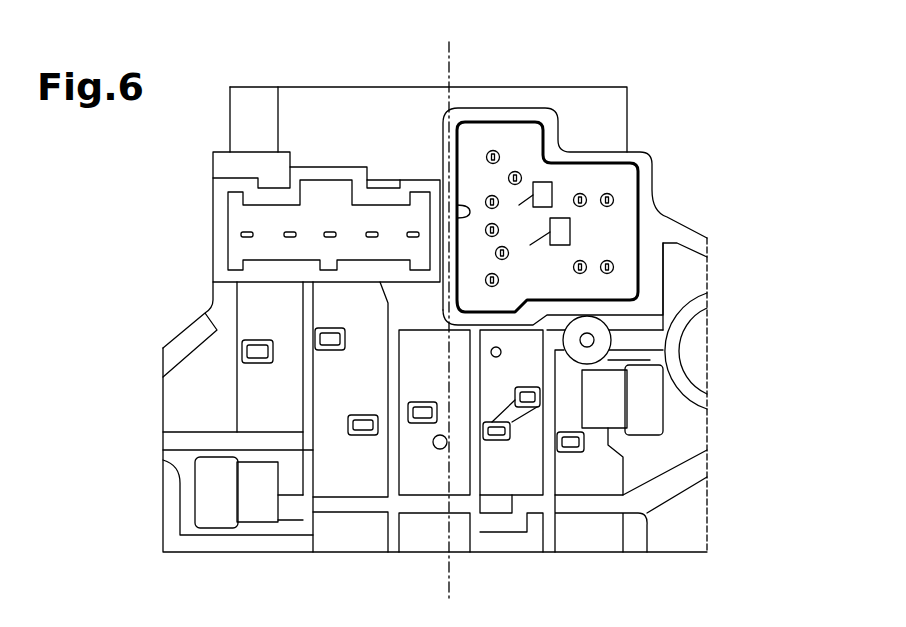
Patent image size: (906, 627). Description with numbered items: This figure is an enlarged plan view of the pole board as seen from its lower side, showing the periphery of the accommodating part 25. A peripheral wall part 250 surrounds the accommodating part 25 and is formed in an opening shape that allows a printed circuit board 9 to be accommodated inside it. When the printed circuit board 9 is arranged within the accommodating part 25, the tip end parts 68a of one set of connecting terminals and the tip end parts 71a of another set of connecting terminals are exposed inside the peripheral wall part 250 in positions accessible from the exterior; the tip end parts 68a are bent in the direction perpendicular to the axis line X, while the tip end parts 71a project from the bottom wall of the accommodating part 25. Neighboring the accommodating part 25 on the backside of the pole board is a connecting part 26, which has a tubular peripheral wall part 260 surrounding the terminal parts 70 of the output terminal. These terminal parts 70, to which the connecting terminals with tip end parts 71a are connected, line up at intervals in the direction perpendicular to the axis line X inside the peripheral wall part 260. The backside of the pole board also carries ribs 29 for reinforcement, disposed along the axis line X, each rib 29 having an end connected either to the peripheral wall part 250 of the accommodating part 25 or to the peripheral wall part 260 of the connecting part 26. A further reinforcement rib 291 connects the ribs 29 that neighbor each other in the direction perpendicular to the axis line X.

The connecting part 26 is at (297, 83).
The axis line X is at (451, 307).
The peripheral wall part 260 is at (274, 217).
The terminal parts 70 is at (330, 229).
The peripheral wall part 250 is at (575, 168).
The accommodating part 25 is at (547, 163).
The tip end parts 71a is at (499, 124).
The tip end parts 68a is at (511, 288).
The printed circuit board 9 is at (667, 290).
The reinforcement rib 291 is at (422, 484).
The ribs 29 is at (472, 549).